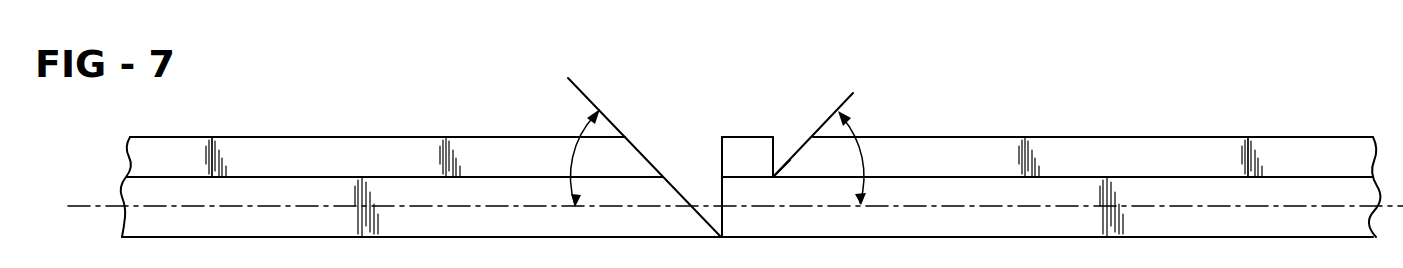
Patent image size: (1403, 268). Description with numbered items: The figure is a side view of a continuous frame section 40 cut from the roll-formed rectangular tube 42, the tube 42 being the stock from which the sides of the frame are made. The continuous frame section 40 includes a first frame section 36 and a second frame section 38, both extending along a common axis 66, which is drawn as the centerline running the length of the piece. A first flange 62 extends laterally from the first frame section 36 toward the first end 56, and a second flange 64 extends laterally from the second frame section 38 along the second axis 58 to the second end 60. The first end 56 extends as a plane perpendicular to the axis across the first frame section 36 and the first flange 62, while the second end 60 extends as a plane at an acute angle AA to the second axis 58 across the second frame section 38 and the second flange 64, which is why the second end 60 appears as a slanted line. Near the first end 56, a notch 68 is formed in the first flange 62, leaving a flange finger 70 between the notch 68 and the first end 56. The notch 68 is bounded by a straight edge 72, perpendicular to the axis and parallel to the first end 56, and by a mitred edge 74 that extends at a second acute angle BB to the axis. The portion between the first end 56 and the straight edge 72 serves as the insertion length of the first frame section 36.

The first frame section 36 is at (1007, 116).
The second frame section 38 is at (321, 127).
The continuous frame section 40 is at (357, 98).
The tube 42 is at (188, 154).
The first end 56 is at (719, 188).
The second axis 58 is at (473, 157).
The second end 60 is at (629, 139).
The first flange 62 is at (1130, 148).
The second flange 64 is at (276, 154).
The common axis 66 is at (79, 194).
The notch 68 is at (786, 148).
The flange finger 70 is at (737, 146).
The straight edge 72 is at (774, 144).
The mitred edge 74 is at (805, 138).
The acute angle AA is at (578, 157).
The second acute angle BB is at (863, 165).